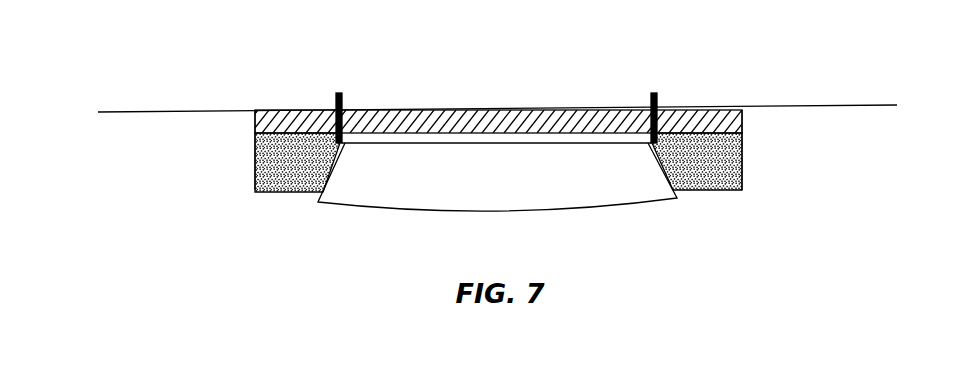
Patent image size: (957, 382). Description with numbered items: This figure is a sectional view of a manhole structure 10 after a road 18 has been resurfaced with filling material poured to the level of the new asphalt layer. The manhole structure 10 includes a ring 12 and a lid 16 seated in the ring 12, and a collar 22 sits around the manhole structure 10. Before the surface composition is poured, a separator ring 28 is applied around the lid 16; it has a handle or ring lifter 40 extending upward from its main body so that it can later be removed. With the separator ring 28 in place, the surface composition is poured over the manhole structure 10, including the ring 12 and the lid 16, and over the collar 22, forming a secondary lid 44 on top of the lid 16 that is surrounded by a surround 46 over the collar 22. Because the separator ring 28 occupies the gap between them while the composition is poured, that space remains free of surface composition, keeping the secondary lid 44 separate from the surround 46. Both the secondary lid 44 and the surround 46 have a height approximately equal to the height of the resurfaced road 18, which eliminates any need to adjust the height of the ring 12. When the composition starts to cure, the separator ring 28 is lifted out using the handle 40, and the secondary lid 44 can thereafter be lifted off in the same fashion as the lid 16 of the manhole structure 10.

The manhole structure 10 is at (497, 153).
The ring 12 is at (392, 190).
The lid 16 is at (466, 140).
The resurfaced road 18 is at (828, 106).
The collar 22 is at (254, 170).
The separator ring 28 is at (352, 110).
The handle 40 is at (338, 96).
The secondary lid 44 is at (520, 120).
The surround 46 is at (268, 110).